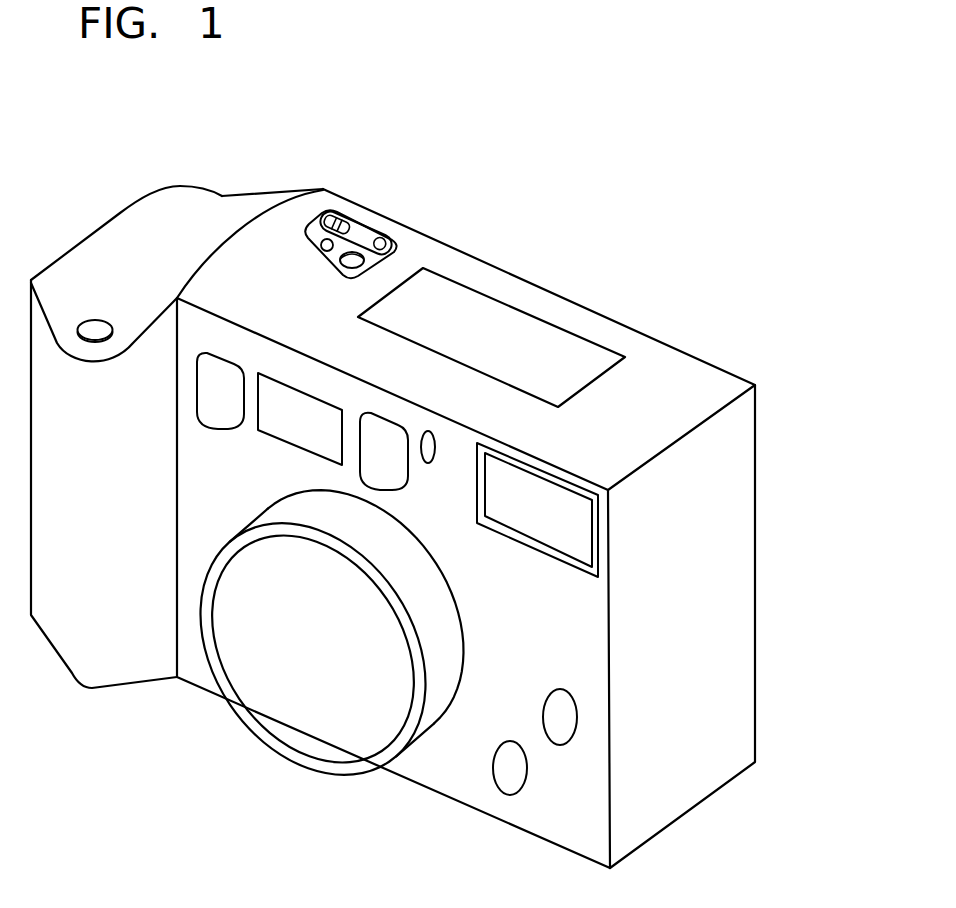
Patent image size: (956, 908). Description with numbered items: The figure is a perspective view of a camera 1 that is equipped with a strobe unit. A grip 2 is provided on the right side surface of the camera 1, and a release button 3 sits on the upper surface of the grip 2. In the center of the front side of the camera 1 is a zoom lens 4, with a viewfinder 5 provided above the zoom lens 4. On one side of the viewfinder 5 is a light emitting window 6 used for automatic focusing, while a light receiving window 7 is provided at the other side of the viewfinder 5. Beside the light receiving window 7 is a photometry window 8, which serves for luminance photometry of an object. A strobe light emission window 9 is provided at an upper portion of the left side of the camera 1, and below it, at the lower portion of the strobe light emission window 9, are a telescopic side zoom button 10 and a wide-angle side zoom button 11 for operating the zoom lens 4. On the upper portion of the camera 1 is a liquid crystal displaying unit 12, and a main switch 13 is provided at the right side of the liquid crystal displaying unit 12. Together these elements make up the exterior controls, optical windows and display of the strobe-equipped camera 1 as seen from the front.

The camera 1 is at (516, 157).
The grip 2 is at (80, 657).
The release button 3 is at (92, 323).
The zoom lens 4 is at (313, 730).
The viewfinder 5 is at (273, 427).
The light emitting window 6 is at (202, 389).
The light receiving window 7 is at (380, 426).
The photometry window 8 is at (428, 453).
The strobe light emission window 9 is at (578, 528).
The telescopic side zoom button 10 is at (576, 704).
The wide-angle side zoom button 11 is at (505, 786).
The liquid crystal displaying unit 12 is at (495, 306).
The main switch 13 is at (340, 218).